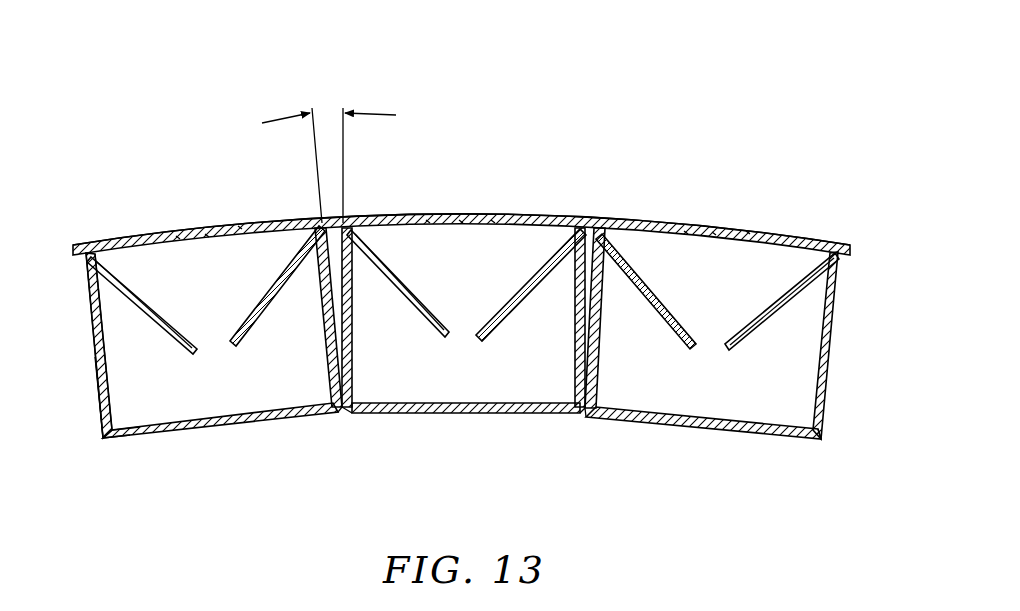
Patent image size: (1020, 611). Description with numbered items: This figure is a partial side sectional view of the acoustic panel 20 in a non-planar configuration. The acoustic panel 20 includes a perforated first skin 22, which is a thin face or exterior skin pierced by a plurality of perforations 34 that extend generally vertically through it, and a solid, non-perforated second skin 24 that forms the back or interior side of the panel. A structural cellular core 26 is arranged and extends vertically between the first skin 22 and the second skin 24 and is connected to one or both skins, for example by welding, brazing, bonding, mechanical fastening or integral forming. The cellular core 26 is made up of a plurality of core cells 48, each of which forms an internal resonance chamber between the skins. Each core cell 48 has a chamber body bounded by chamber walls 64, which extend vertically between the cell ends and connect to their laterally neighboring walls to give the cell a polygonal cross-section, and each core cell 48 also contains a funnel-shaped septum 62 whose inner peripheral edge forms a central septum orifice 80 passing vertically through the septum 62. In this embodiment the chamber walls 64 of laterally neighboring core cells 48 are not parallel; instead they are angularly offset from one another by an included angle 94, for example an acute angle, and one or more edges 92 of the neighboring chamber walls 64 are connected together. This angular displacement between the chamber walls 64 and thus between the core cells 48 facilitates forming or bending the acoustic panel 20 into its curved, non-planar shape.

The acoustic panel 20 is at (708, 132).
The first skin 22 is at (69, 249).
The second skin 24 is at (86, 443).
The cellular core 26 is at (70, 260).
The perforations 34 is at (240, 228).
The core cells 48 is at (135, 276).
The septum 62 is at (288, 290).
The chamber walls 64 is at (110, 359).
The septum orifice 80 is at (218, 350).
The edges 92 is at (103, 440).
The included angle 94 is at (376, 112).